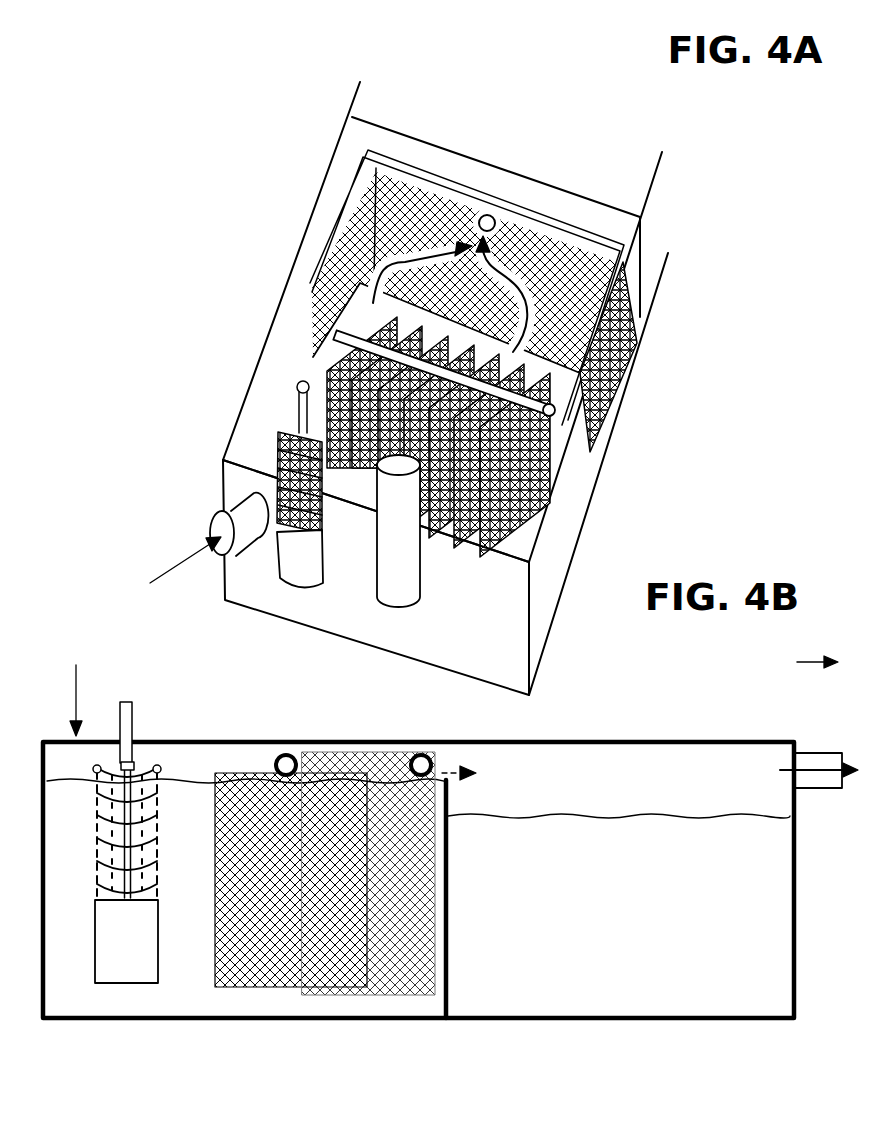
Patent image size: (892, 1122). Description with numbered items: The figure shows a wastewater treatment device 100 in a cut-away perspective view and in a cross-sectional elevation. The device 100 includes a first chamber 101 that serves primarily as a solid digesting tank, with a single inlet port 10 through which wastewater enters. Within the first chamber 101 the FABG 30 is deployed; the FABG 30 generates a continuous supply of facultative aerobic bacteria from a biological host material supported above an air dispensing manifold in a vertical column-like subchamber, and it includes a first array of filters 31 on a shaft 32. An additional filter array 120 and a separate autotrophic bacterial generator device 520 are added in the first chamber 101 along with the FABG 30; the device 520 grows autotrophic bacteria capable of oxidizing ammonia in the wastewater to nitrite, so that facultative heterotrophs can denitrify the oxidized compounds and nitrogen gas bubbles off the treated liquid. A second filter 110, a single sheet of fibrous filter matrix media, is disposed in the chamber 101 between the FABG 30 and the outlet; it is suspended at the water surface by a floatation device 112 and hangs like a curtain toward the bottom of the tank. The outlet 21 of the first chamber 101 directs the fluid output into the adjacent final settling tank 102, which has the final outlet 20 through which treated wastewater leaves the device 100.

In FIG. 4A, the wastewater treatment device 100 is at (265, 155).
In FIG. 4B, the wastewater treatment device 100 is at (418, 880).
In FIG. 4A, the first chamber 101 is at (214, 374).
In FIG. 4B, the first chamber 101 is at (166, 1000).
In FIG. 4A, the final settling tank 102 is at (605, 168).
In FIG. 4B, the final settling tank 102 is at (637, 909).
In FIG. 4A, the second filter 110 is at (637, 288).
In FIG. 4B, the second filter 110 is at (400, 930).
In FIG. 4B, the floatation device 112 is at (432, 752).
In FIG. 4A, the additional filter array 120 is at (537, 468).
In FIG. 4B, the additional filter array 120 is at (257, 947).
In FIG. 4A, the outlet 21 is at (492, 190).
In FIG. 4B, the outlet 21 is at (478, 777).
In FIG. 4B, the final outlet 20 is at (820, 753).
In FIG. 4A, the inlet port 10 is at (209, 538).
In FIG. 4B, the inlet port 10 is at (75, 685).
In FIG. 4A, the FABG 30 is at (313, 583).
In FIG. 4B, the FABG 30 is at (110, 956).
In FIG. 4A, the first array of filters 31 is at (273, 463).
In FIG. 4B, the first array of filters 31 is at (162, 817).
In FIG. 4A, the pump shaft 32 is at (288, 404).
In FIG. 4B, the pump shaft 32 is at (128, 725).
In FIG. 4A, the autotrophic bacterial generator device 520 is at (408, 573).